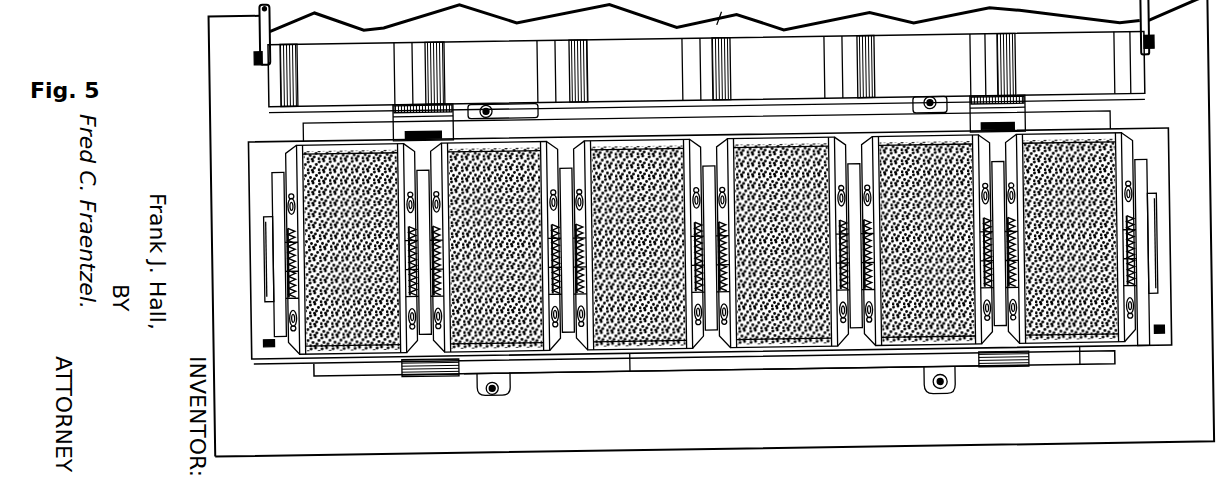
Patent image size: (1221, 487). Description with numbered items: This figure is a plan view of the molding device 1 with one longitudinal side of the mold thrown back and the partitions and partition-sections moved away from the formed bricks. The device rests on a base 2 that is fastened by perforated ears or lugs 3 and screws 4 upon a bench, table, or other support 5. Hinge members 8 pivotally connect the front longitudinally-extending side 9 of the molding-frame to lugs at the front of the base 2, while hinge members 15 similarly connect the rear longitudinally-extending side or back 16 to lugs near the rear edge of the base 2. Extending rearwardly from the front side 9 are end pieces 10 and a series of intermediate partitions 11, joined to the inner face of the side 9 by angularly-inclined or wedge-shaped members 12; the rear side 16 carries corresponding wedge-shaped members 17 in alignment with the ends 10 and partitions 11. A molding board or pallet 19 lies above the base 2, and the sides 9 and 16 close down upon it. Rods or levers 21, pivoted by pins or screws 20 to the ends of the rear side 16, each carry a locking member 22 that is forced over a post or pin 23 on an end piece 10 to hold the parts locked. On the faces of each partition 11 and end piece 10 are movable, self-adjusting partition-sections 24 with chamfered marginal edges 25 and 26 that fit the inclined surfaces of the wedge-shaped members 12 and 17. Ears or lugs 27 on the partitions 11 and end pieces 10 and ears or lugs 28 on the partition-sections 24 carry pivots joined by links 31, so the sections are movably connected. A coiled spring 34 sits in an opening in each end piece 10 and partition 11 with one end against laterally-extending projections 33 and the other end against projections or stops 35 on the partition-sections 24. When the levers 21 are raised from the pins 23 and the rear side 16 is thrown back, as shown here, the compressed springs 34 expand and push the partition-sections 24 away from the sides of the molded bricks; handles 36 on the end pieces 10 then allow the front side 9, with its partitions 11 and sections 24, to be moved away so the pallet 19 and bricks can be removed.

The molding device 1 is at (738, 19).
The base 2 is at (333, 124).
The perforated ears or lugs 3 is at (504, 104).
The screws 4 is at (487, 101).
The support 5 is at (712, 228).
The hinge members 8 is at (440, 371).
The front side 9 is at (628, 351).
The end pieces 10 is at (272, 186).
The intermediate partitions 11 is at (565, 205).
The wedge-shaped members 12 is at (287, 343).
The hinge members 15 is at (398, 101).
The rear side 16 is at (652, 52).
The wedge-shaped members 17 is at (397, 55).
The molding board or pallet 19 is at (262, 346).
The pins or screws 20 is at (257, 49).
The rods or levers 21 is at (275, 10).
The locking member 22 is at (265, 22).
The post or pin 23 is at (262, 331).
The movable partition-sections 24 is at (412, 270).
The chamfered marginal edge 25 is at (302, 343).
The chamfered marginal edge 26 is at (297, 138).
The ears or lugs 27 is at (412, 215).
The ears or lugs 28 is at (412, 182).
The links 31 is at (412, 198).
The laterally-extending projections 33 is at (412, 288).
The coiled spring 34 is at (412, 252).
The projections or stops 35 is at (412, 232).
The handles 36 is at (268, 255).